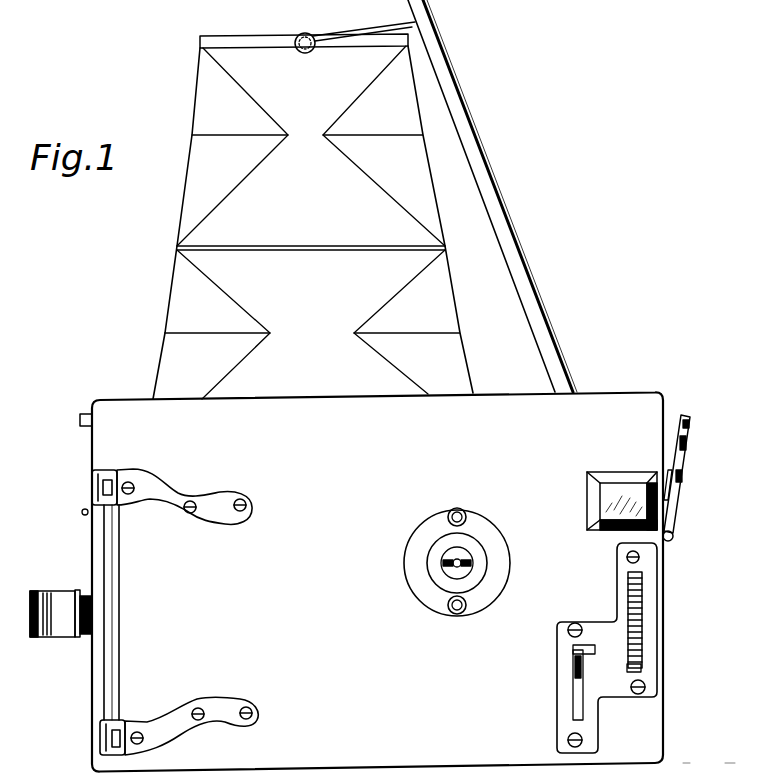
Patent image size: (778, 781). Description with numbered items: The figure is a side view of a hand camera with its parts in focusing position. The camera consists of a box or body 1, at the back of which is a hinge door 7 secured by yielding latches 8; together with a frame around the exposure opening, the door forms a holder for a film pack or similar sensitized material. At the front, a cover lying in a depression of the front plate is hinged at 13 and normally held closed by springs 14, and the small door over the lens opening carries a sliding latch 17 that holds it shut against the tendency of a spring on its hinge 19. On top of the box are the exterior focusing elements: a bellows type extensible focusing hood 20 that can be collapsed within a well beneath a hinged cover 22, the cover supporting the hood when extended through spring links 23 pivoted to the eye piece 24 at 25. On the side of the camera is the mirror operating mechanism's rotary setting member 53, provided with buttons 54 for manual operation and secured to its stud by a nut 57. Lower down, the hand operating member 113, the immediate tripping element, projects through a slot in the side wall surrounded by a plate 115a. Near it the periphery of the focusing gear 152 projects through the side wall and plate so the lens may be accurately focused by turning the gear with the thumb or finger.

The box or body 1 is at (370, 462).
The hinge door 7 is at (91, 533).
The yielding latches 8 is at (165, 488).
The hinge 13 is at (680, 776).
The springs 14 is at (722, 776).
The sliding latch 17 is at (684, 473).
The hinge 19 is at (674, 535).
The extensible focusing hood 20 is at (451, 257).
The hinged cover 22 is at (481, 149).
The spring links 23 is at (357, 34).
The eye piece 24 is at (250, 41).
The pivot 25 is at (311, 22).
The rotary setting member 53 is at (478, 549).
The buttons 54 is at (468, 510).
The nut 57 is at (466, 573).
The hand operating member 113 is at (573, 650).
The plate 115a is at (637, 676).
The gear 152 is at (644, 592).